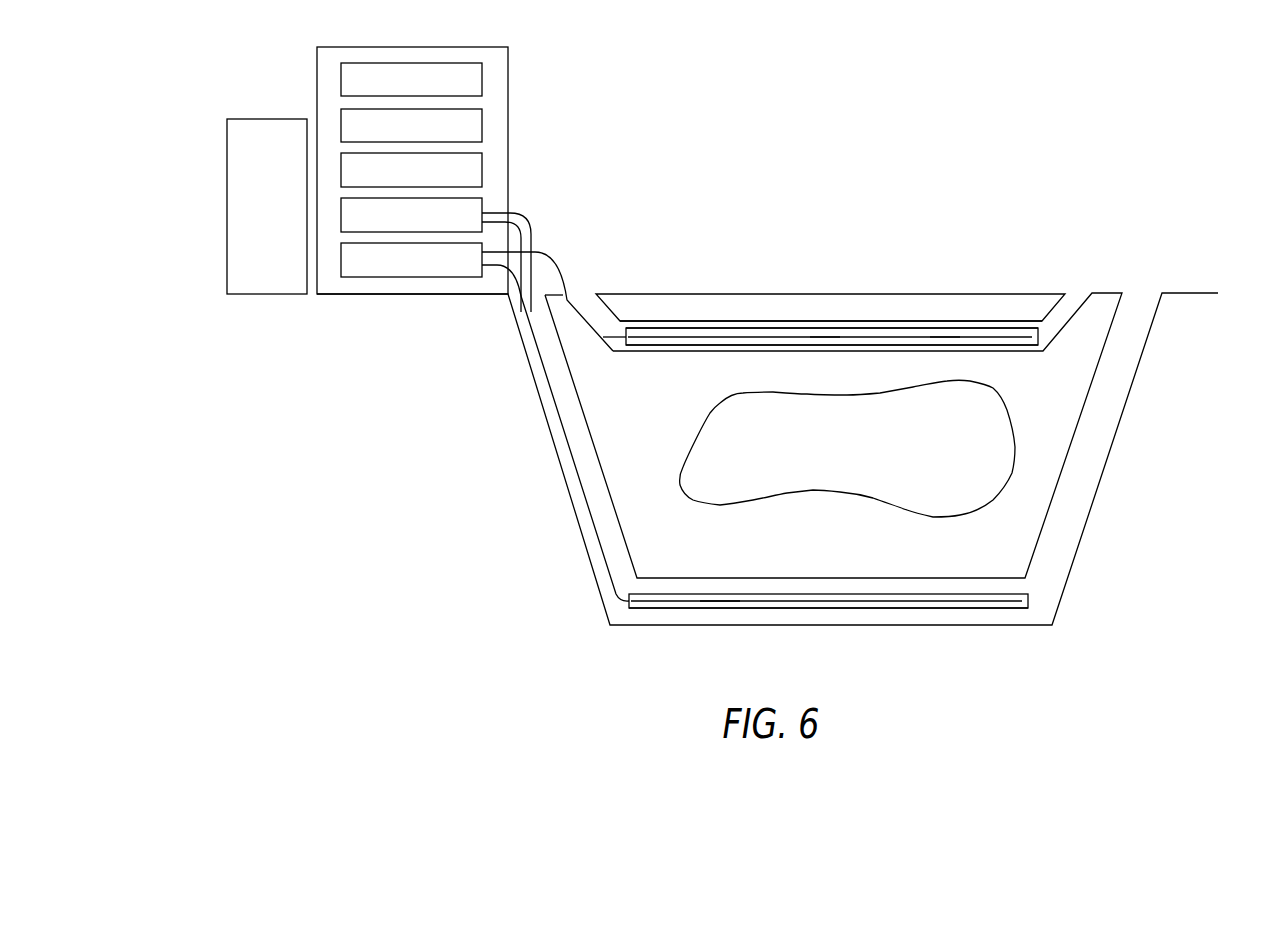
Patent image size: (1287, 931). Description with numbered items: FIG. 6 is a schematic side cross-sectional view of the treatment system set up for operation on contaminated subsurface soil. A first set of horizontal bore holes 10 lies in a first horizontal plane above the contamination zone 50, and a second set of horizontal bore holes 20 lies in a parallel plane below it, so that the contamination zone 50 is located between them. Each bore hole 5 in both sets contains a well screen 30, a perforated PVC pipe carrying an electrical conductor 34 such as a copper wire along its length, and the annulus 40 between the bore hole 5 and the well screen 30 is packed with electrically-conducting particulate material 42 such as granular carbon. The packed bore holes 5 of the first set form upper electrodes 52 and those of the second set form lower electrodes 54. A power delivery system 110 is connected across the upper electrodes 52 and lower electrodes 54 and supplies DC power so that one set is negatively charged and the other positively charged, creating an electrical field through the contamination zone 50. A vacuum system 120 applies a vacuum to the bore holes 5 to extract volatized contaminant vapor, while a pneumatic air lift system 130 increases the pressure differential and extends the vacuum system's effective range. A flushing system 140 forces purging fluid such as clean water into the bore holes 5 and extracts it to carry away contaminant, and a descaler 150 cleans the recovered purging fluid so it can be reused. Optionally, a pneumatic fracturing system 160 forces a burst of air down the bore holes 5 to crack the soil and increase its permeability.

The bore hole 5 is at (653, 330).
The first set of horizontal bore holes 10 is at (590, 300).
The second set of horizontal bore holes 20 is at (538, 307).
The well screen 30 is at (946, 337).
The electrical conductor 34 is at (1009, 337).
The annulus 40 is at (763, 336).
The electrically-conducting particulate material 42 is at (881, 336).
The contamination zone 50 is at (910, 515).
The upper electrodes 52 is at (713, 321).
The lower electrodes 54 is at (748, 578).
The power delivery system 110 is at (429, 272).
The vacuum system 120 is at (429, 227).
The pneumatic air lift system 130 is at (429, 182).
The flushing system 140 is at (429, 137).
The descaler 150 is at (283, 204).
The pneumatic fracturing system 160 is at (429, 91).